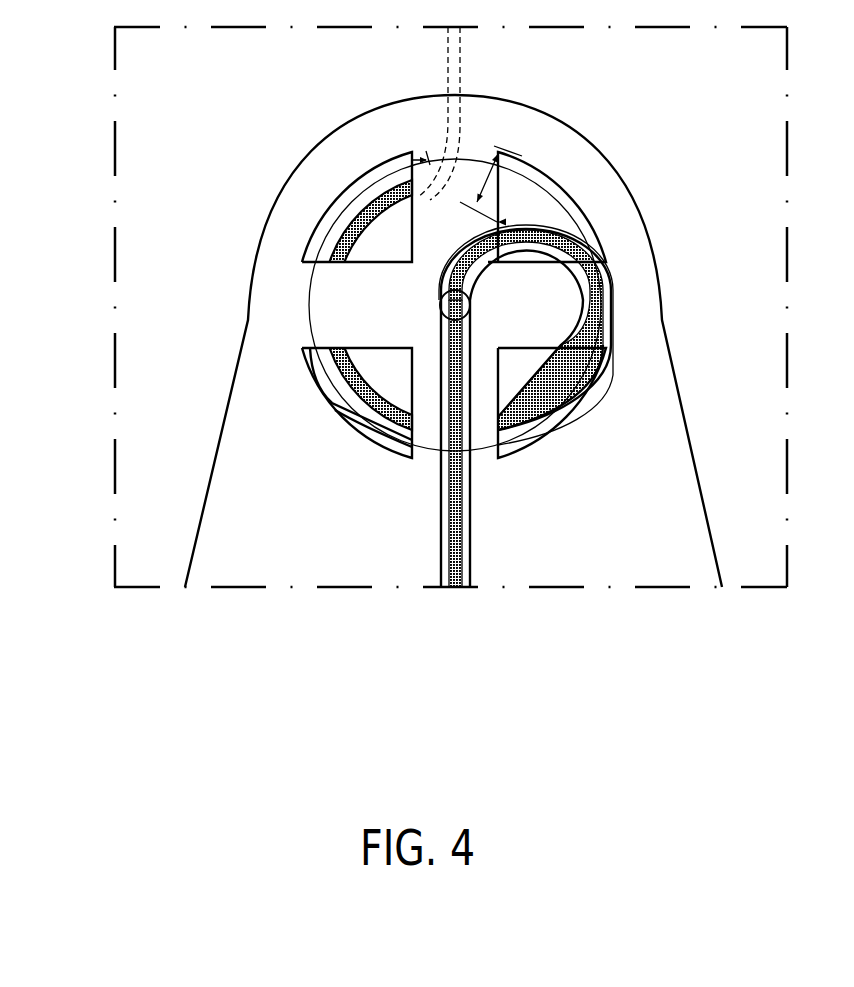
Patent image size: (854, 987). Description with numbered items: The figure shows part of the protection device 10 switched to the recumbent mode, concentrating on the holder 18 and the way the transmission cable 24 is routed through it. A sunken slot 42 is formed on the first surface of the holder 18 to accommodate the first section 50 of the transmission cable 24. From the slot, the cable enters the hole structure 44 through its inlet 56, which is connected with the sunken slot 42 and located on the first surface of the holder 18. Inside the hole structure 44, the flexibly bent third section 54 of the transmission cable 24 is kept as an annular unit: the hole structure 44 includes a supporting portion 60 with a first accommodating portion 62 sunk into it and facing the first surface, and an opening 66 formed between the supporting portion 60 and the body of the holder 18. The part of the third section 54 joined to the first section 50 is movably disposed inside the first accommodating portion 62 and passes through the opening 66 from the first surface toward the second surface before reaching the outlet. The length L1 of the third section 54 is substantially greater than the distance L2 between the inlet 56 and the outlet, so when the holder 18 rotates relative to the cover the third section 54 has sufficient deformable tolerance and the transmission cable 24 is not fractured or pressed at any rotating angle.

The holder 18 is at (146, 187).
The protection device 10 is at (453, 341).
The inlet 56 is at (493, 254).
The supporting portion 60 is at (527, 300).
The first accommodating portion 62 is at (614, 291).
The opening 66 is at (560, 368).
The hole structure 44 is at (723, 155).
The sunken slot 42 is at (472, 570).
The first section 50 is at (453, 563).
The third section 54 is at (560, 388).
The transmission cable 24 is at (483, 408).
The length of the third section L1 is at (312, 301).
The distance between the inlet and the outlet L2 is at (489, 186).